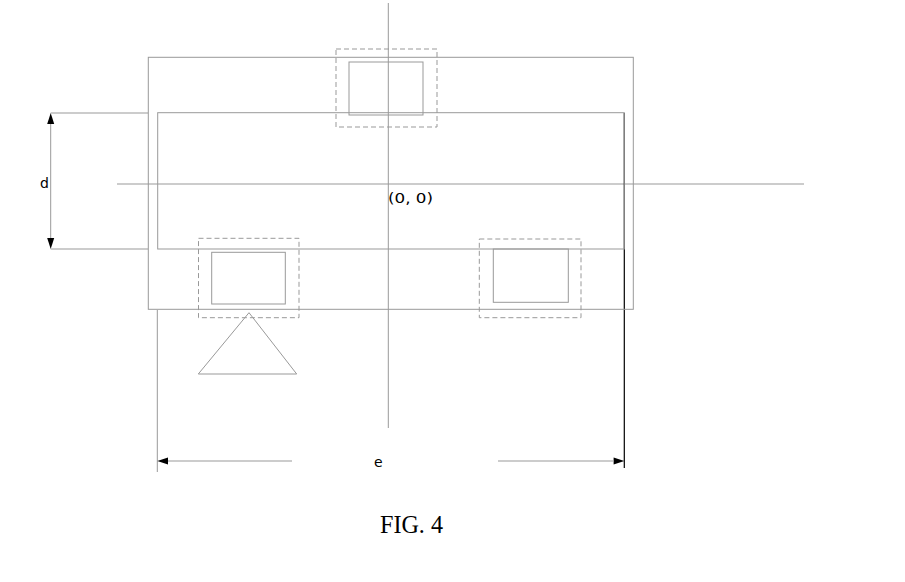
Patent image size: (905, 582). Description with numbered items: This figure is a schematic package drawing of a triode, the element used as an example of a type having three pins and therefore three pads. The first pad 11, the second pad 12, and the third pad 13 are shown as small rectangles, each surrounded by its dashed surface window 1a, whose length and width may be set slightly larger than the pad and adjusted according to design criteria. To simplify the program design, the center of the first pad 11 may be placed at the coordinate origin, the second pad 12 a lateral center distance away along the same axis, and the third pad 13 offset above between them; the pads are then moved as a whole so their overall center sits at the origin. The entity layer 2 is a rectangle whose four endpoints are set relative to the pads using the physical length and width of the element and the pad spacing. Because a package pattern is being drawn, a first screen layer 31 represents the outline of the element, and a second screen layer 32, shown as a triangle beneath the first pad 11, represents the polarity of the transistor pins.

The first screen layer 31 is at (633, 79).
The entity layer 2 is at (624, 232).
The third pad 13 is at (373, 62).
The first pad 11 is at (224, 304).
The second pad 12 is at (522, 303).
The surface window 1a is at (551, 318).
The second screen layer 32 is at (275, 374).